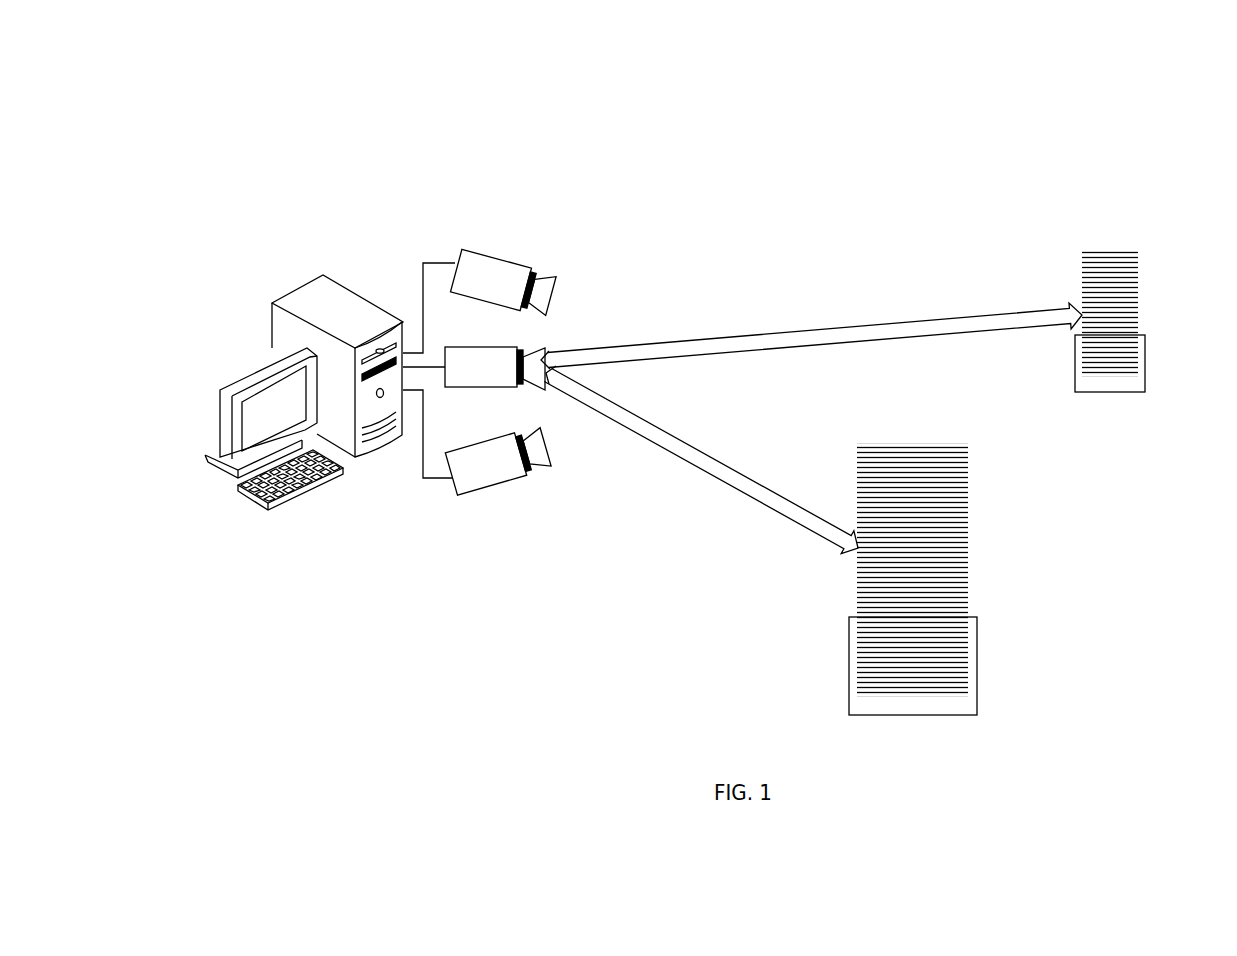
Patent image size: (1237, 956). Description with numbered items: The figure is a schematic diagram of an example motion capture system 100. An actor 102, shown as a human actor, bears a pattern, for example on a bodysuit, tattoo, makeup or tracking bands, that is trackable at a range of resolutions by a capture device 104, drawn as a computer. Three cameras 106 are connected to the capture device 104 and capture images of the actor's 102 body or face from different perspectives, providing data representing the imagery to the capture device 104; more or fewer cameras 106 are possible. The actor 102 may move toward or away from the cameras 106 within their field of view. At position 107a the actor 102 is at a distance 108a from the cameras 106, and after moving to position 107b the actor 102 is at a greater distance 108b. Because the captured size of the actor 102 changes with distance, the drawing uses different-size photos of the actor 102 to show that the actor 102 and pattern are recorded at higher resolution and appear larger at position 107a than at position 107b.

The motion capture system 100 is at (283, 127).
The actor 102 is at (1000, 518).
The capture device 104 is at (330, 386).
The cameras 106 is at (500, 372).
The position 107a is at (978, 668).
The position 107b is at (1146, 363).
The distance 108a is at (718, 485).
The distance 108b is at (738, 337).